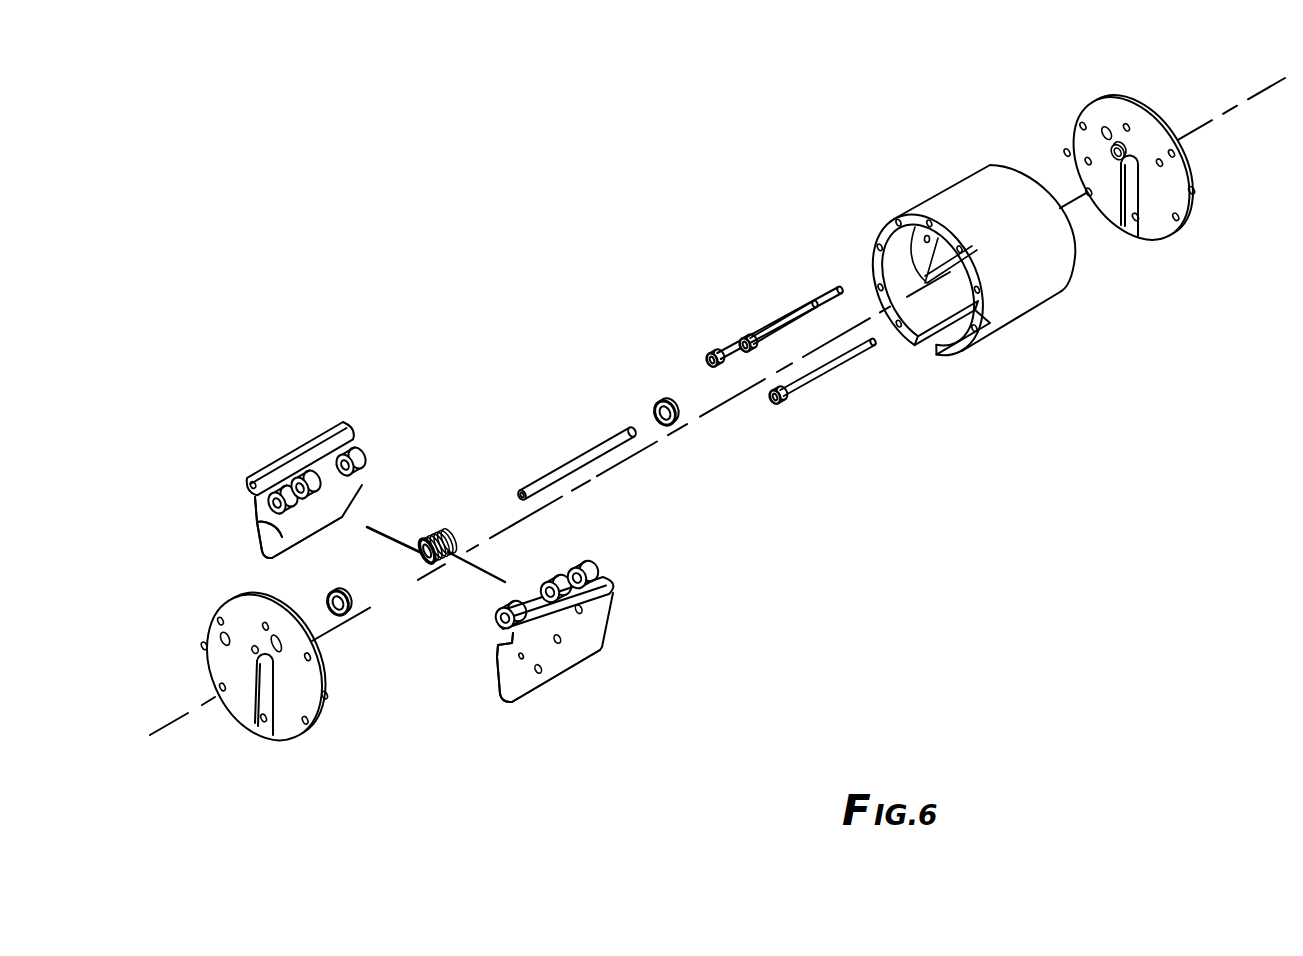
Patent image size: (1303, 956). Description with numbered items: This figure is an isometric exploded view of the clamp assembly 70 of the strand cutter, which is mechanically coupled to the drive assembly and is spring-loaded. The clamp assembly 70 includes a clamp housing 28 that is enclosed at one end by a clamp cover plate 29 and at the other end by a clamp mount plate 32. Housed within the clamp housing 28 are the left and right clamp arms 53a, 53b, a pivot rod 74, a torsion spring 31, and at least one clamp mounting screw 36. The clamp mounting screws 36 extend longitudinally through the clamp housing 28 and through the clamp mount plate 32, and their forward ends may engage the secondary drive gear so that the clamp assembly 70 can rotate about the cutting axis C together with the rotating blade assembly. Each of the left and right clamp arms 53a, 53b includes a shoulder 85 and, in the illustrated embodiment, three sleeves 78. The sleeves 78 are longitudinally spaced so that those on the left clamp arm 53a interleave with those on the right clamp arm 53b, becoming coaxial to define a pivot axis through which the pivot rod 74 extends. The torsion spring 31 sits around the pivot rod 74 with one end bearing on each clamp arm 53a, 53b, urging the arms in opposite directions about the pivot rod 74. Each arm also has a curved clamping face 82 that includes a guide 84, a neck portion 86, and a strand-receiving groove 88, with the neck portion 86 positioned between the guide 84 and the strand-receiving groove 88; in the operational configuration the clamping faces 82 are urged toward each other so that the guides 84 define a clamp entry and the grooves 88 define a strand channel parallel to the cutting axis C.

The clamp assembly 70 is at (322, 228).
The clamp housing 28 is at (947, 187).
The clamp mount plate 32 is at (1098, 120).
The clamp cover plate 29 is at (222, 645).
The clamp mounting screw 36 is at (790, 307).
The pivot rod 74 is at (572, 455).
The cutting axis C is at (657, 443).
The torsion spring 31 is at (445, 527).
The left clamp arm 53a is at (318, 477).
The right clamp arm 53b is at (580, 667).
The shoulder 85 is at (247, 477).
The sleeves 78 is at (367, 458).
The curved clamping face 82 is at (320, 520).
The guide 84 is at (293, 547).
The neck portion 86 is at (280, 537).
The strand-receiving groove 88 is at (257, 523).